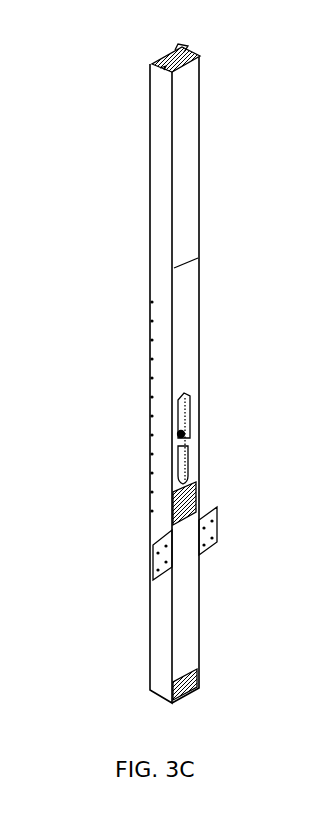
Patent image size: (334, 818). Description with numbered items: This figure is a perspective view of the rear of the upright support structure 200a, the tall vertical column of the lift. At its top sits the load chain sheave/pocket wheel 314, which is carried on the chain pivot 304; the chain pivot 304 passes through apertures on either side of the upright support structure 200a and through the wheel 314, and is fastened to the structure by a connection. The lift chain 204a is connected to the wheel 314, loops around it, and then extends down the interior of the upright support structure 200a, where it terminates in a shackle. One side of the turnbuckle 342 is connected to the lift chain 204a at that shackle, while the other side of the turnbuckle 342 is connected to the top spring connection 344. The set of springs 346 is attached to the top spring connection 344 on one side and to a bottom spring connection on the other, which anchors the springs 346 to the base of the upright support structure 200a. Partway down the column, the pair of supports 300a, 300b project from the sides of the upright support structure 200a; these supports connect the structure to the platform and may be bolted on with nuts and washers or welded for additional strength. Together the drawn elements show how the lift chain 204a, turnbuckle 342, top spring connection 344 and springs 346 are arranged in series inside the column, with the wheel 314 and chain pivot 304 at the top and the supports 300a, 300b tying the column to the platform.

The upright support structure 200a is at (147, 643).
The lift chain 204a is at (197, 402).
The support 300a is at (217, 528).
The support 300b is at (148, 552).
The chain pivot 304 is at (185, 58).
The load chain sheave/pocket wheel 314 is at (168, 62).
The turnbuckle 342 is at (198, 432).
The top spring connection 344 is at (197, 463).
The set of springs 346 is at (197, 498).